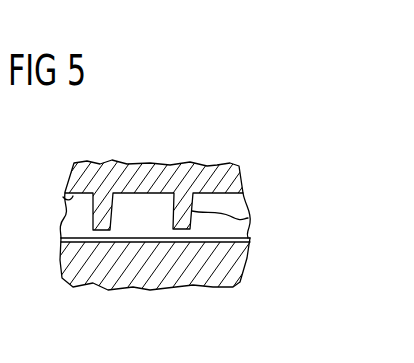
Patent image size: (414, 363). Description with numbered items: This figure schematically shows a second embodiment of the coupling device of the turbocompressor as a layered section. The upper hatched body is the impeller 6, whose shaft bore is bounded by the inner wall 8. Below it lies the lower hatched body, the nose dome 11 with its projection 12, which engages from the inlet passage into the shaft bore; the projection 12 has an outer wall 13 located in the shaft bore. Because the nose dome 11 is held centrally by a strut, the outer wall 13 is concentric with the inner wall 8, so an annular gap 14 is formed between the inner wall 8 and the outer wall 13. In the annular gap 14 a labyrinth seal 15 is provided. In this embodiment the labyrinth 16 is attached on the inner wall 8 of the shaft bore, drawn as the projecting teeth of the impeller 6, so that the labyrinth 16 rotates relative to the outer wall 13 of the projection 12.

The impeller 6 is at (193, 164).
The inner wall 8 is at (63, 197).
The nose dome 11 is at (157, 289).
The projection 12 is at (197, 286).
The outer wall 13 is at (247, 237).
The annular gap 14 is at (63, 220).
The labyrinth seal 15 is at (262, 153).
The labyrinth 16 is at (248, 218).